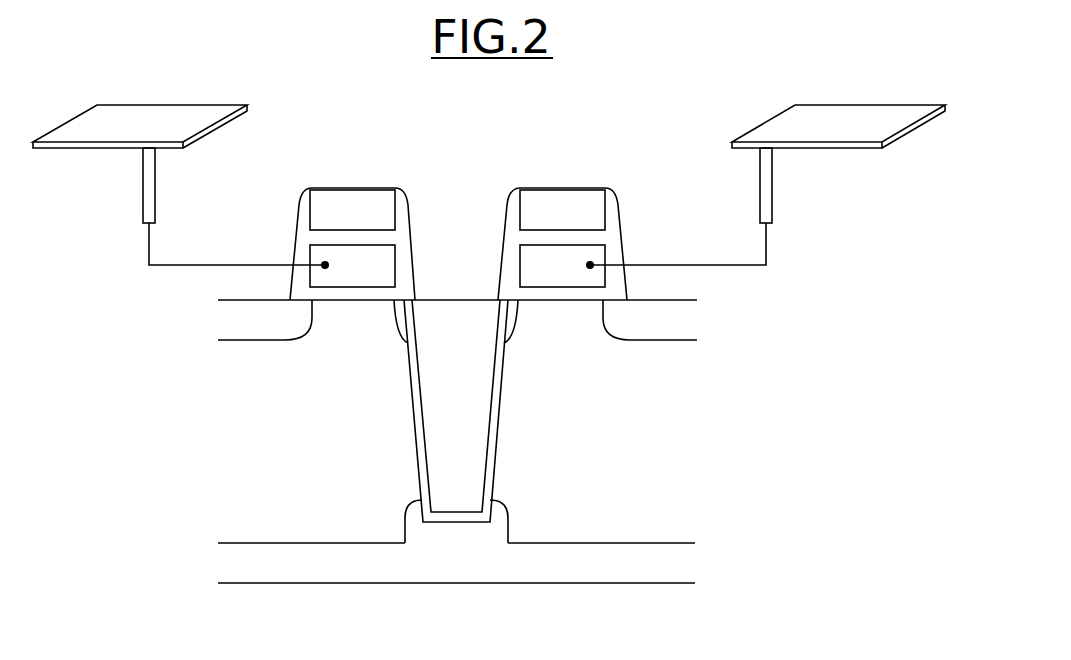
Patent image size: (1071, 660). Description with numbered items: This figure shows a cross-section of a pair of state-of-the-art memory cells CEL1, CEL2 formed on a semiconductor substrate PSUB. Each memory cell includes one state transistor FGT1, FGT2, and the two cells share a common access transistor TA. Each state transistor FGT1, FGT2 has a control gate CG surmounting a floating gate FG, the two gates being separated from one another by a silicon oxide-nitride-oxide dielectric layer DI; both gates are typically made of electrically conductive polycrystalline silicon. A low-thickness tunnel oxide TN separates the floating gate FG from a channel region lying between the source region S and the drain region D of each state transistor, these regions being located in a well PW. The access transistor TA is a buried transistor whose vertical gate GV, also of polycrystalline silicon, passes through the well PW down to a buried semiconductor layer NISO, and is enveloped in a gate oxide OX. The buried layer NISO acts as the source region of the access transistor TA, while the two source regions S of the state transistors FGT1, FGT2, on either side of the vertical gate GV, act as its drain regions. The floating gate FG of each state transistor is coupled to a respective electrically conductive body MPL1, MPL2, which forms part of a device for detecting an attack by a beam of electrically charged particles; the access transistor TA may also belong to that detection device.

The electrically conductive body MPL1 is at (85, 152).
The electrically conductive body MPL2 is at (848, 152).
The state transistor FGT1 is at (646, 190).
The state transistor FGT2 is at (272, 190).
The memory cell CEL1 is at (567, 170).
The memory cell CEL2 is at (346, 170).
The control gate CG is at (369, 222).
The floating gate FG is at (368, 277).
The dielectric layer DI is at (323, 237).
The tunnel oxide TN is at (332, 295).
The drain region D is at (223, 322).
The source region S is at (395, 321).
The access transistor TA is at (516, 432).
The vertical gate GV is at (474, 409).
The gate oxide OX is at (422, 473).
The well PW is at (298, 523).
The buried semiconductor layer NISO is at (609, 576).
The semiconductor substrate PSUB is at (607, 628).